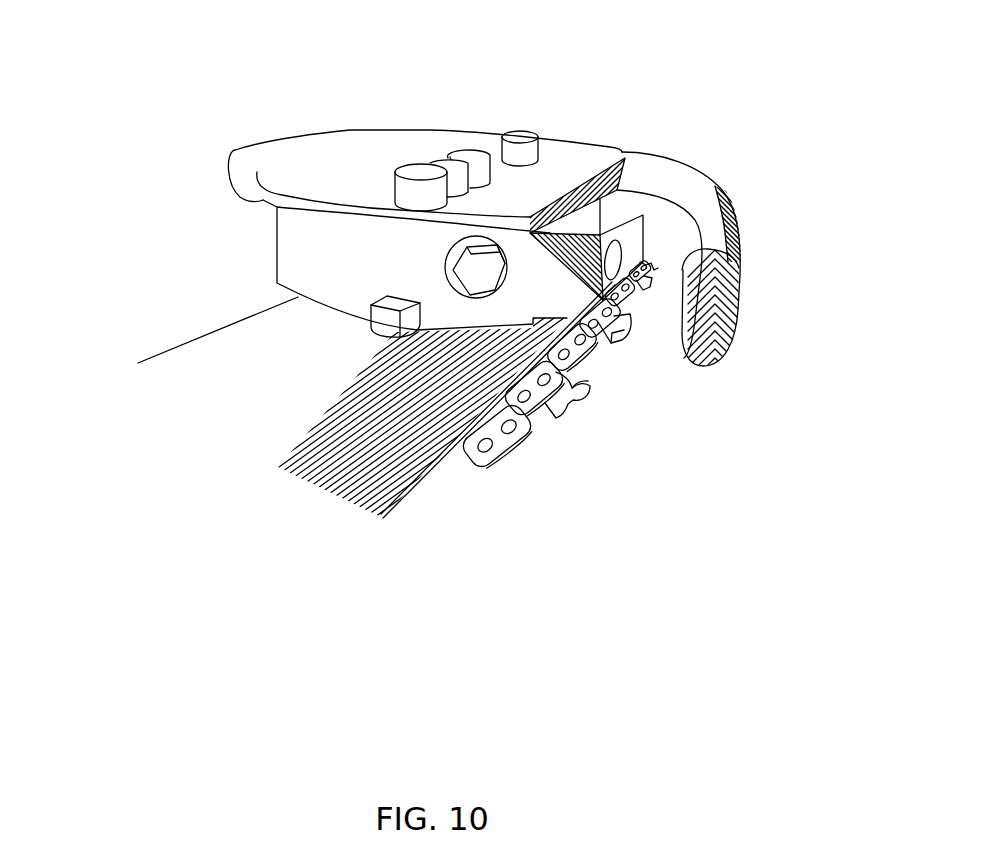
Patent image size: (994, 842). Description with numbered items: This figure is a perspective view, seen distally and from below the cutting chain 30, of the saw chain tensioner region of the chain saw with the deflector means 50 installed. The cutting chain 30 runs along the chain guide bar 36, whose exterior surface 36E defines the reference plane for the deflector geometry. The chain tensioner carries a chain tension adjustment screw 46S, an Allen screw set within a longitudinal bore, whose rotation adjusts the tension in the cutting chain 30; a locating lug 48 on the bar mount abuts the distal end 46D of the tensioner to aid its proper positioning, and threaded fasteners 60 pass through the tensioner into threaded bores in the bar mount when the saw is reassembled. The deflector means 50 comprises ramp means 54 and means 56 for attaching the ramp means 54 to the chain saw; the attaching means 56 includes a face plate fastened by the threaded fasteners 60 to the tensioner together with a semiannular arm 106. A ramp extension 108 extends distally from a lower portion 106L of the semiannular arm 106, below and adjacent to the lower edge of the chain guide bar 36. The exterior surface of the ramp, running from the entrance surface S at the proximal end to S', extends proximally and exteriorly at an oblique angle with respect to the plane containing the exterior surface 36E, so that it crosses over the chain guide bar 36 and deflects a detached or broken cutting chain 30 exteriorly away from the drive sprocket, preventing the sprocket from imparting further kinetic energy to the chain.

The cutting chain 30 is at (570, 400).
The chain guide bar 36 is at (213, 403).
The exterior surface of the chain guide bar 36E is at (265, 392).
The distal end of the chain tensioner 46D is at (370, 260).
The chain tension adjustment screw 46S is at (476, 266).
The locating lug 48 is at (362, 322).
The deflector means 50 is at (718, 113).
The ramp means 54 is at (748, 374).
The means for attaching the ramp means 56 is at (322, 98).
The threaded fasteners 60 is at (512, 133).
The semiannular arm 106 is at (655, 160).
The lower portion of the semiannular arm 106L is at (738, 210).
The ramp extension 108 is at (740, 292).
The entrance surface S is at (705, 306).
The exterior surface end point of the ramp S' is at (717, 218).